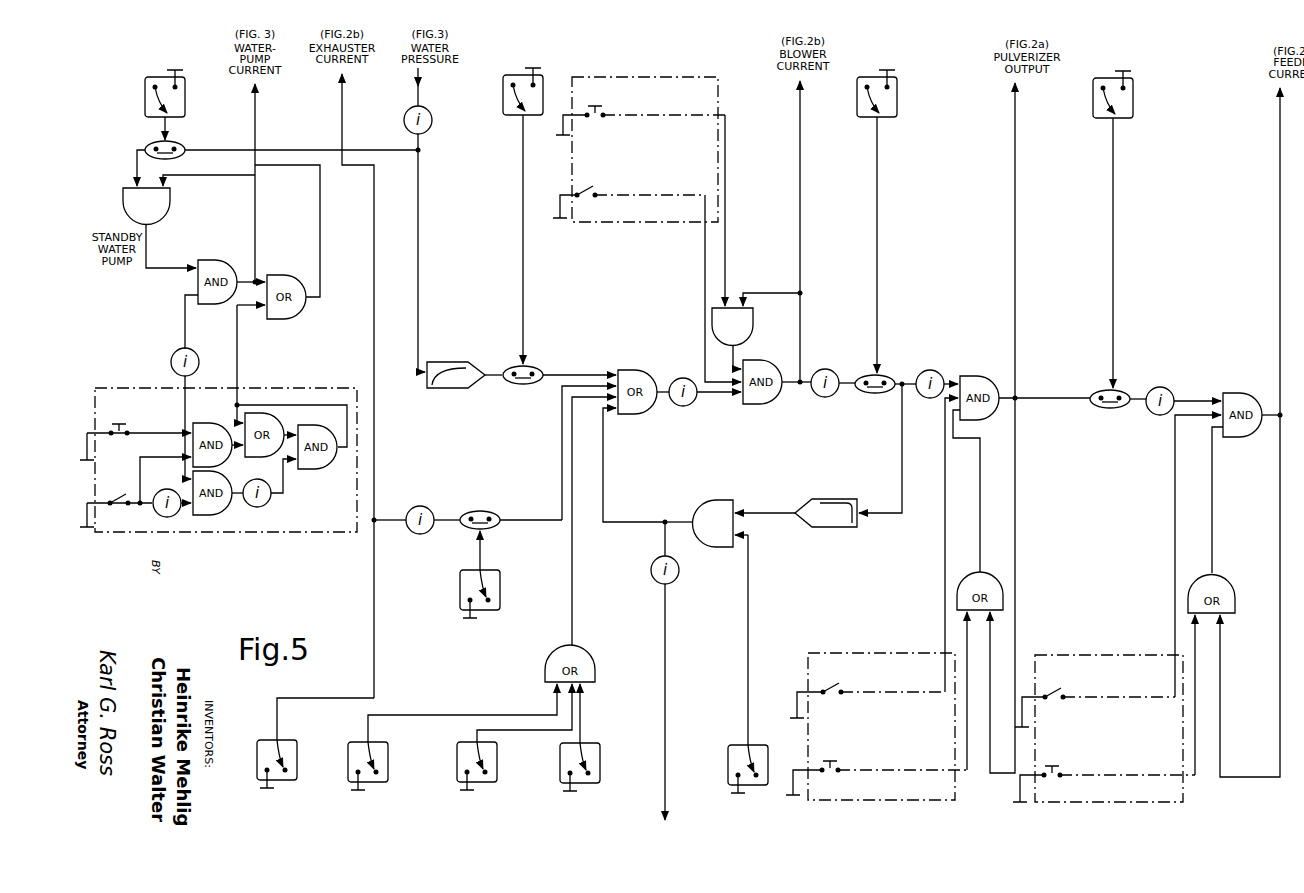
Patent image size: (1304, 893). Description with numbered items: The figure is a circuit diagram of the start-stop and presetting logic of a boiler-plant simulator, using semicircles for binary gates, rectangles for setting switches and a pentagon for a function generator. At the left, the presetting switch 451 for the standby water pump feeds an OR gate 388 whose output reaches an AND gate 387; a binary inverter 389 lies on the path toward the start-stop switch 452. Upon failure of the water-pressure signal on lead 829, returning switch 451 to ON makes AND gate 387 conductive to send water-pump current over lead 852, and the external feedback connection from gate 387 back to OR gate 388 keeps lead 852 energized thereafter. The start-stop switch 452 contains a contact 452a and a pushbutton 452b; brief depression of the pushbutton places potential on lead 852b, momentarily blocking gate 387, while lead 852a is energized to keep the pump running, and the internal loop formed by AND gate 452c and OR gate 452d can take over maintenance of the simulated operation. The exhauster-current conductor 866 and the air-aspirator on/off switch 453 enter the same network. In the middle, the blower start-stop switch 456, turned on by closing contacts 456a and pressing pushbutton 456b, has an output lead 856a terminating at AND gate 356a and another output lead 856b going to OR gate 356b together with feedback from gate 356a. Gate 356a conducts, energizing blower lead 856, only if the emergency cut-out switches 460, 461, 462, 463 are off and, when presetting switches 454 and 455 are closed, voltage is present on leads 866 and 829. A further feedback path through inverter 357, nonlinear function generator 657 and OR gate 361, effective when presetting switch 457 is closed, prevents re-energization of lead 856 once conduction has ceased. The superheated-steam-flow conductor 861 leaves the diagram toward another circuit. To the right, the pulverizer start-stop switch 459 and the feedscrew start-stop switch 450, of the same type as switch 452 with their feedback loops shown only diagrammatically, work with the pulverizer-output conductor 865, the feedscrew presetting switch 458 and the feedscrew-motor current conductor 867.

The presetting switch for standby water pump 451 is at (185, 112).
The lead for water-pump current 852 is at (257, 118).
The conductor for voltage simulating current input of combustion-chamber exhauster 866 is at (343, 100).
The lead for water-pressure signal 829 is at (420, 106).
The OR gate 388 is at (172, 206).
The AND gate 387 is at (210, 258).
The binary inverter 389 is at (172, 356).
The lead 852a is at (240, 362).
The lead 852b is at (183, 377).
The start-stop switch for standby water pump 452 is at (275, 532).
The contact 452a is at (126, 486).
The pushbutton 452b is at (148, 418).
The AND gate 452c is at (316, 469).
The OR gate 452d is at (288, 418).
The presetting switch for blower assembly 455 is at (510, 115).
The start-stop switch for blower assembly 456 is at (718, 100).
The contacts 456a is at (590, 190).
The pushbutton 456b is at (604, 111).
The lead for blower current 856 is at (802, 150).
The output lead of switch 456 856a is at (703, 280).
The output lead of switch 456 856b is at (727, 275).
The AND gate 356a is at (762, 404).
The OR gate 356b is at (754, 322).
The inverter 357 is at (825, 369).
The OR gate 361 is at (729, 500).
The nonlinear function generator 657 is at (815, 528).
The presetting switch for burner assembly 454 is at (500, 572).
The conductor for superheated-steam flow 861 is at (663, 600).
The on/off switch for air aspirator 453 is at (258, 738).
The emergency cut-out switch for burner assembly 463 is at (388, 760).
The emergency cut-out switch for boiler assembly 462 is at (497, 760).
The emergency cut-out switch for pulverizer assembly 460 is at (598, 745).
The emergency cut-out switch for generator assembly 461 is at (730, 745).
The start-stop switch for pulverizer assembly 459 is at (955, 800).
The presetting switch for pulverizer assembly 457 is at (897, 117).
The conductor for voltage simulating pulverizer output 865 is at (1014, 103).
The presetting switch for feedscrew assembly 458 is at (1133, 118).
The conductor for voltage simulating input current for feedscrew motor 867 is at (1279, 125).
The start-stop switch for feedscrew drive 450 is at (1183, 793).